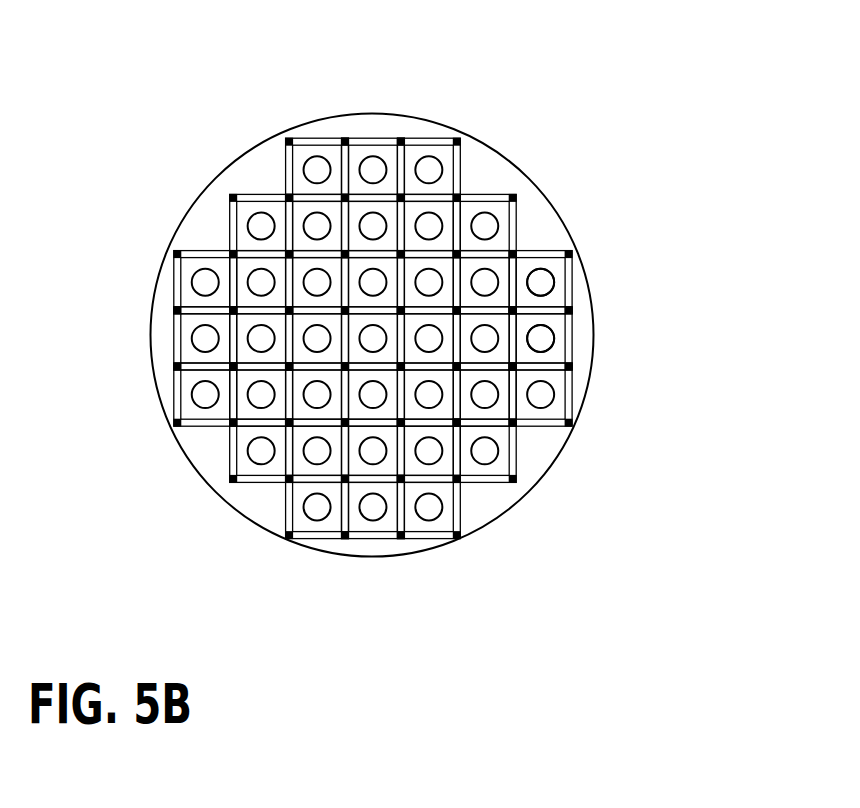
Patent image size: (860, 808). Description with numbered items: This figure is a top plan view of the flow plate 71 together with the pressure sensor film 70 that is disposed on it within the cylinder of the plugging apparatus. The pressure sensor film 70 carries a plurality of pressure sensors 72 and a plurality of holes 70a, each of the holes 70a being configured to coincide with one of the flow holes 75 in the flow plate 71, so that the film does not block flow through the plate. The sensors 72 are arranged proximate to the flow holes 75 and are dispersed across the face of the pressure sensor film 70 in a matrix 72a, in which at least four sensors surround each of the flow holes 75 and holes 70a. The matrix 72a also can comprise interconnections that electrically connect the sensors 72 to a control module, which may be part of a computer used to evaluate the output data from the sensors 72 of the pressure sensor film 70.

The pressure sensor film 70 is at (416, 335).
The flow plate 71 is at (566, 207).
The pressure sensors 72 is at (372, 278).
The matrix 72a is at (380, 137).
The holes 70a is at (652, 310).
The flow holes 75 is at (540, 282).